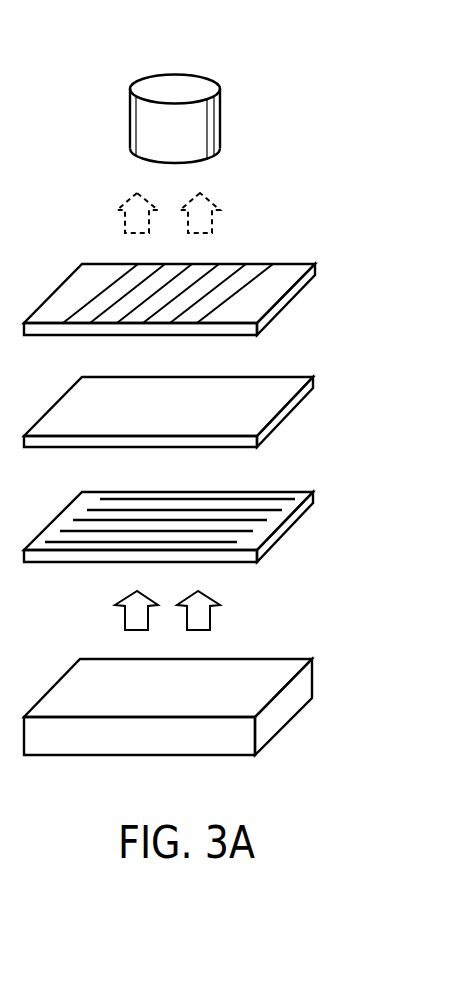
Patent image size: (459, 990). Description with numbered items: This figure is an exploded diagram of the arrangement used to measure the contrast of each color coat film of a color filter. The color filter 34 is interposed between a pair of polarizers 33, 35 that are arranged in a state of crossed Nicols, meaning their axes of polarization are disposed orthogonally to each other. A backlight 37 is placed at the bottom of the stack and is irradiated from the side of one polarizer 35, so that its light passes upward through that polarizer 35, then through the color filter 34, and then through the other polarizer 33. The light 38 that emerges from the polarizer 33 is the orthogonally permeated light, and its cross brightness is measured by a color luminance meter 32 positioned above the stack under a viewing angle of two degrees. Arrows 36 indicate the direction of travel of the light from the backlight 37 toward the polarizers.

The color luminance meter 32 is at (197, 126).
The polarizer 33 is at (283, 302).
The color filter 34 is at (283, 415).
The polarizer 35 is at (283, 528).
The arrows (light direction) 36 is at (210, 615).
The backlight 37 is at (283, 710).
The light 38 is at (212, 219).